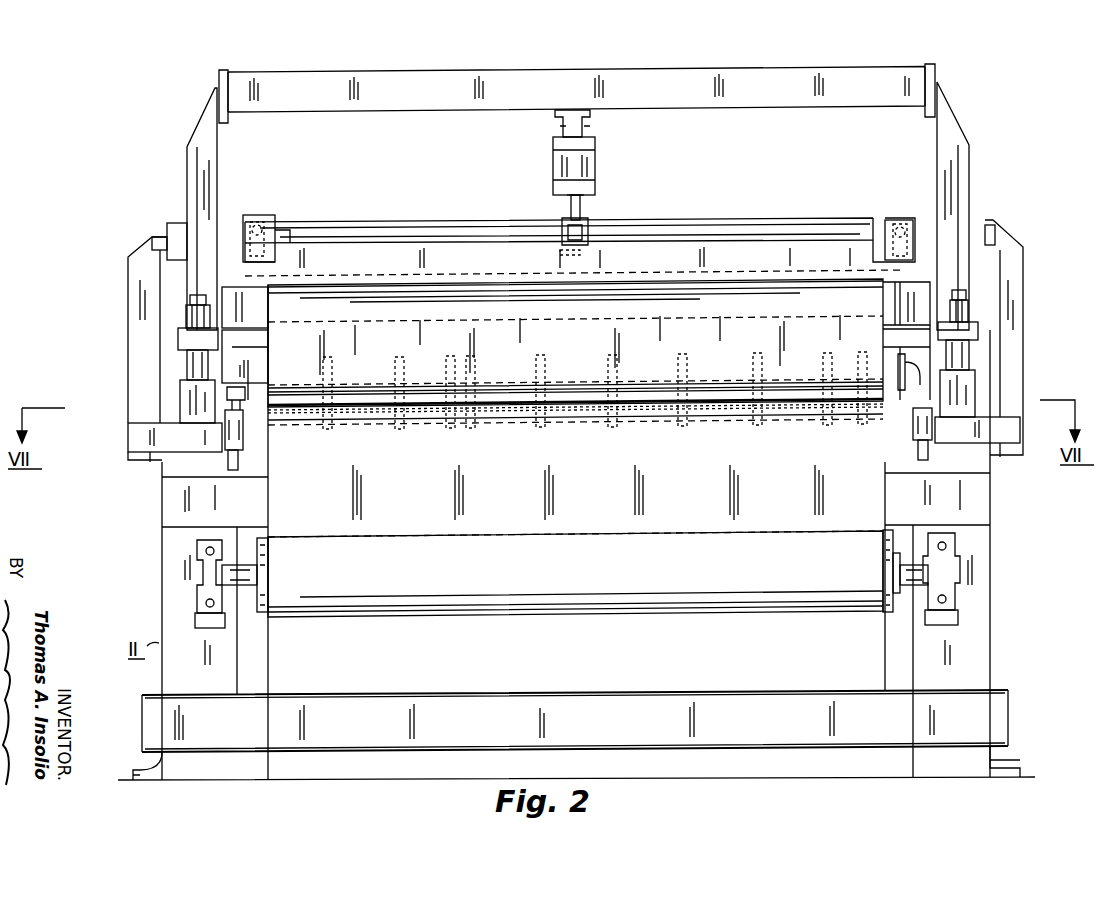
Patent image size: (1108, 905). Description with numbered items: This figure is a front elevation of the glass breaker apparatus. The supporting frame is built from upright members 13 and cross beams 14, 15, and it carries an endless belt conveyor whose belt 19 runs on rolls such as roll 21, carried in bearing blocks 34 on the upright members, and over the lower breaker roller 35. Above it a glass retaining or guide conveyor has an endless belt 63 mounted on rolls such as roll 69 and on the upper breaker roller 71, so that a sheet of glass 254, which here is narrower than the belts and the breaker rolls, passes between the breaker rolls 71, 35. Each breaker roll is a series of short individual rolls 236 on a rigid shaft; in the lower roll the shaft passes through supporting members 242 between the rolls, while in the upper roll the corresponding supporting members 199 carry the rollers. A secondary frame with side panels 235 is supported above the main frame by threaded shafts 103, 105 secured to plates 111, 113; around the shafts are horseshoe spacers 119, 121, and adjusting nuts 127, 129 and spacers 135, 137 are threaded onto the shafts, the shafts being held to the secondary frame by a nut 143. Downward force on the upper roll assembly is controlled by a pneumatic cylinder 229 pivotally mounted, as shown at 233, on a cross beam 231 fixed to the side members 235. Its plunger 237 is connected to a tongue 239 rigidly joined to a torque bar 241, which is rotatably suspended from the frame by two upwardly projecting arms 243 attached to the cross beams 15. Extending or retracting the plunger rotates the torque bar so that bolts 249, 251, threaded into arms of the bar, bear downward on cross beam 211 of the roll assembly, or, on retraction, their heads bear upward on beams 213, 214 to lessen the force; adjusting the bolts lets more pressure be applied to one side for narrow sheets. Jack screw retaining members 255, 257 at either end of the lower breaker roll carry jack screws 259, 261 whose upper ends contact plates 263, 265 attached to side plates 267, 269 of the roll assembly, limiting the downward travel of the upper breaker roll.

The cross beam 231 is at (750, 68).
The pivotal mounting 233 is at (595, 124).
The pneumatic cylinder 229 is at (595, 162).
The plunger 237 is at (582, 206).
The tongue 239 is at (562, 227).
The cross beam 211 is at (763, 236).
The beam 214 is at (885, 229).
The bolt 251 is at (905, 222).
The side panels 235 is at (187, 138).
The torque bar 241 is at (173, 222).
The bolt 249 is at (250, 222).
The beam 213 is at (274, 234).
The upwardly projecting arms 243 is at (126, 257).
The threaded shaft 103 is at (190, 297).
The threaded nut 143 is at (186, 317).
The spacer 135 is at (178, 333).
The adjusting nut 127 is at (187, 363).
The horseshoe spacer 119 is at (180, 397).
The plate 111 is at (130, 436).
The cross beam 15 is at (158, 460).
The roll 69 is at (266, 321).
The side plate 267 is at (232, 348).
The plate 263 is at (245, 387).
The jack screw retaining member 255 is at (243, 435).
The jack screw 259 is at (238, 460).
The breaker roller 71 is at (512, 380).
The supporting members 199 is at (608, 360).
The sheet of glass 254 is at (730, 400).
The individual rolls 236 is at (450, 430).
The breaker roller 35 is at (490, 430).
The supporting members 242 is at (612, 432).
The endless belt 63 is at (754, 273).
The side plate 269 is at (883, 340).
The plate 265 is at (898, 364).
The jack screw retaining member 257 is at (913, 426).
The jack screw 261 is at (918, 450).
The threaded shaft 105 is at (966, 291).
The spacer 137 is at (978, 326).
The adjusting nut 129 is at (969, 353).
The horseshoe spacer 121 is at (975, 384).
The plate 113 is at (1004, 445).
The upright members 13 is at (165, 598).
The bearing block 34 is at (197, 608).
The roll 21 is at (257, 590).
The belt 19 is at (805, 615).
The cross beam 14 is at (513, 690).